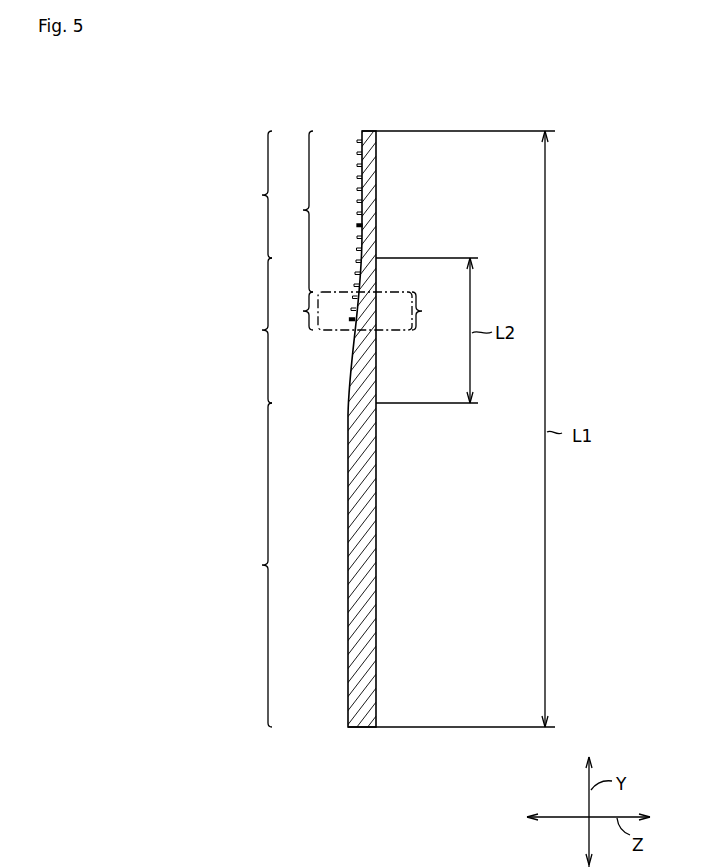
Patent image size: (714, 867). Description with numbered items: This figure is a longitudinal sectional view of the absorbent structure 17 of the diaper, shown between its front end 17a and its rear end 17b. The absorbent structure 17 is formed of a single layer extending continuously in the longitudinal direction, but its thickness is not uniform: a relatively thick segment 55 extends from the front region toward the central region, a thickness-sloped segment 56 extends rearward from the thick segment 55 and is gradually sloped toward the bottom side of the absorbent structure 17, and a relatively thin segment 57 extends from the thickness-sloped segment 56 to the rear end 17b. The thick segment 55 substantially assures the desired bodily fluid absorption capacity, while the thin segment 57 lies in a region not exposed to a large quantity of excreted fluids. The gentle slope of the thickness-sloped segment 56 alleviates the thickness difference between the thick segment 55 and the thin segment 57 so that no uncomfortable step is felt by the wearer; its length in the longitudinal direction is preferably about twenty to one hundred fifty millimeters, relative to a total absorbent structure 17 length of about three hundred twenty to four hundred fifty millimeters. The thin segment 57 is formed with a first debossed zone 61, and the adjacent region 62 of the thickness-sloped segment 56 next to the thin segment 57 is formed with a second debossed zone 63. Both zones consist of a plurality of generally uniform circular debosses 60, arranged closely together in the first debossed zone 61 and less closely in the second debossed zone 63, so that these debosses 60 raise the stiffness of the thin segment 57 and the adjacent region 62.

The absorbent structure 17 is at (393, 112).
The front end of absorbent structure 17a is at (358, 729).
The rear end of absorbent structure 17b is at (367, 129).
The relatively thick segment 55 is at (253, 565).
The thickness-sloped segment 56 is at (253, 330).
The relatively thin segment 57 is at (253, 194).
The deboss 60 is at (358, 225).
The first debossed zone 61 is at (295, 211).
The adjacent region of thickness-sloped segment 62 is at (382, 311).
The second debossed zone 63 is at (295, 311).